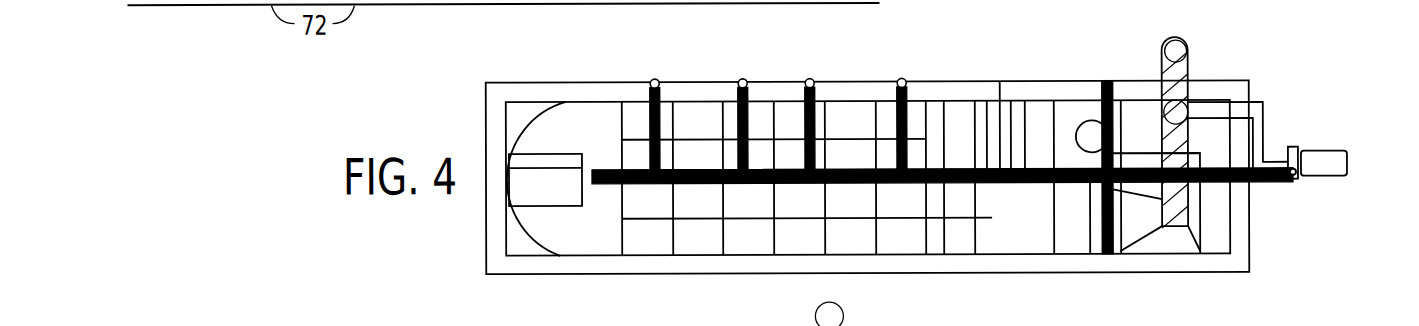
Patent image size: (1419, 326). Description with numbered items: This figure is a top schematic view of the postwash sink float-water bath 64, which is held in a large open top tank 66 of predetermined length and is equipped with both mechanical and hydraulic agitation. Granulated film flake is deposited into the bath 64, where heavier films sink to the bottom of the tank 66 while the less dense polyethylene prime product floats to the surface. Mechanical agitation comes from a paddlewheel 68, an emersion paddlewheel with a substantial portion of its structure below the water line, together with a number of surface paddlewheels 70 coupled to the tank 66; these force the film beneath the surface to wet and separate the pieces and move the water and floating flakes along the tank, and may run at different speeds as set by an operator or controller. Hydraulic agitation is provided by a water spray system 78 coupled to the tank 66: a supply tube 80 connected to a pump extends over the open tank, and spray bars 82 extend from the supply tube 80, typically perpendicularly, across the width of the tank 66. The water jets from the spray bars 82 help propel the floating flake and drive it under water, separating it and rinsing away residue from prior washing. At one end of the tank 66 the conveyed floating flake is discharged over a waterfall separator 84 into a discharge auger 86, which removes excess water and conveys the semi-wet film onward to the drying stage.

The postwash sink float-water bath 64 is at (1272, 33).
The open top tank 66 is at (1249, 238).
The paddlewheel 68 is at (1028, 101).
The surface paddlewheels 70 is at (547, 207).
The water spray system 78 is at (1276, 186).
The supply tube 80 is at (883, 185).
The spray bars 82 is at (738, 93).
The waterfall separator 84 is at (1113, 229).
The discharge auger 86 is at (1188, 67).